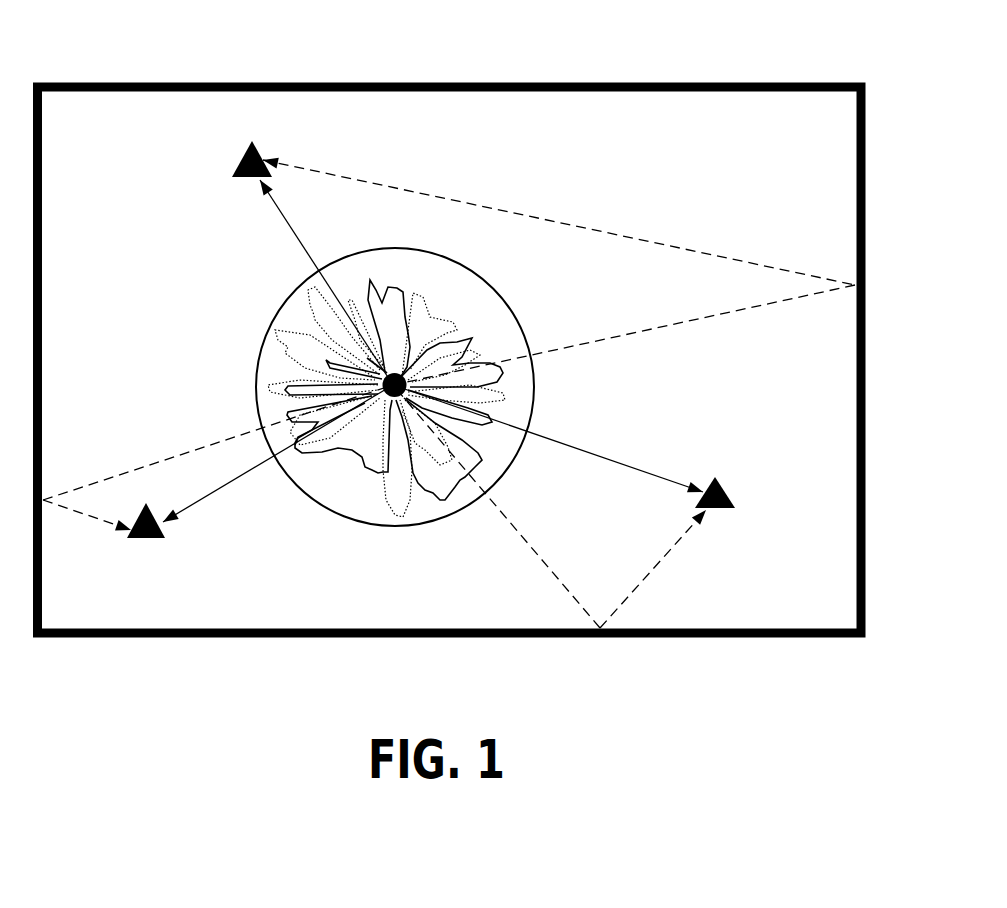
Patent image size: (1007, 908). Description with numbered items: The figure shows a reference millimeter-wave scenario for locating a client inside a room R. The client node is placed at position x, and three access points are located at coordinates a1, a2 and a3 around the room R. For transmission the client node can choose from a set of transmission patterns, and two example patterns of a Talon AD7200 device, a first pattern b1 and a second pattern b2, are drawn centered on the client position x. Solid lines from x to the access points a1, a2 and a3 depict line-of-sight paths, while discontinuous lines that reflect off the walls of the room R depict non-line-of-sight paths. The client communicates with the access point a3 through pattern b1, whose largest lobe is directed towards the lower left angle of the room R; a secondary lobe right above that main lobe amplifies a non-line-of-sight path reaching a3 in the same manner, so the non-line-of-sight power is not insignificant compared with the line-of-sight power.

The room R is at (642, 82).
The first access point a1 is at (235, 151).
The second access point a2 is at (730, 489).
The third access point a3 is at (146, 542).
The first transmission pattern b1 is at (480, 385).
The second transmission pattern b2 is at (312, 307).
The client node position x is at (386, 398).